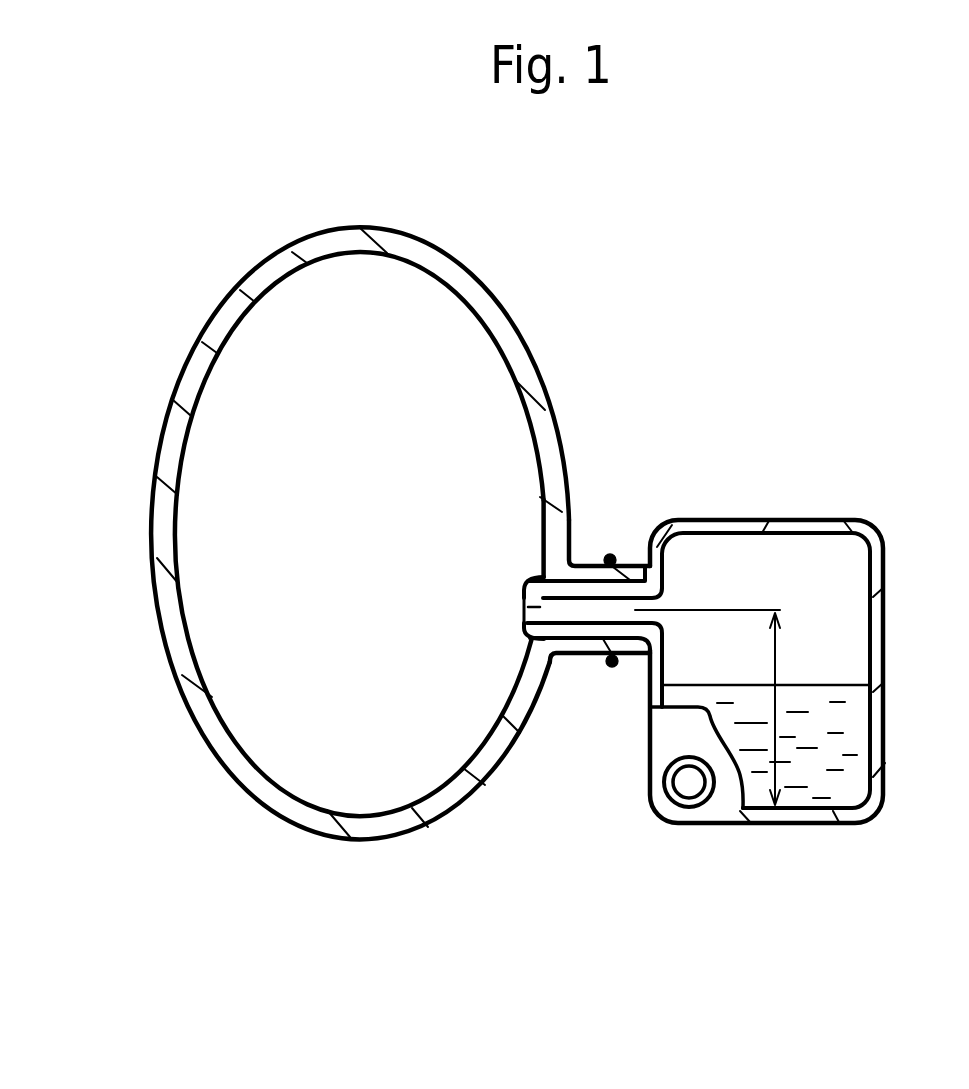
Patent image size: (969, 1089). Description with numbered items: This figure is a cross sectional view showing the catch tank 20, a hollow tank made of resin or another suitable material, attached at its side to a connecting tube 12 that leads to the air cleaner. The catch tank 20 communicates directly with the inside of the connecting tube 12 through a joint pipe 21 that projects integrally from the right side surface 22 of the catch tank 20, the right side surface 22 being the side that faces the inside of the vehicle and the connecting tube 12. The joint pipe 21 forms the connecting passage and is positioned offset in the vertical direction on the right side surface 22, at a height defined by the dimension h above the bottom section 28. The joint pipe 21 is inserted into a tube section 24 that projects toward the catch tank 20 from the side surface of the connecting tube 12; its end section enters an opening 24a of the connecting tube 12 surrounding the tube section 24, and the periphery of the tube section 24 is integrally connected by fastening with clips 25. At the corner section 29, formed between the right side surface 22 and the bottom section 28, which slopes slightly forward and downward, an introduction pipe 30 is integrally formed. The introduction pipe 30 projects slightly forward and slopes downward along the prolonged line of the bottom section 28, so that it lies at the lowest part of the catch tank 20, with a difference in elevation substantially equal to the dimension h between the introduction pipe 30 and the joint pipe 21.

The connecting tube 12 is at (183, 358).
The catch tank 20 is at (794, 506).
The joint pipe 21 is at (538, 608).
The right side surface 22 is at (650, 692).
The tube section 24 is at (589, 556).
The opening 24a is at (522, 620).
The clips 25 is at (610, 556).
The bottom section 28 is at (778, 820).
The corner section 29 is at (708, 815).
The introduction pipe 30 is at (660, 813).